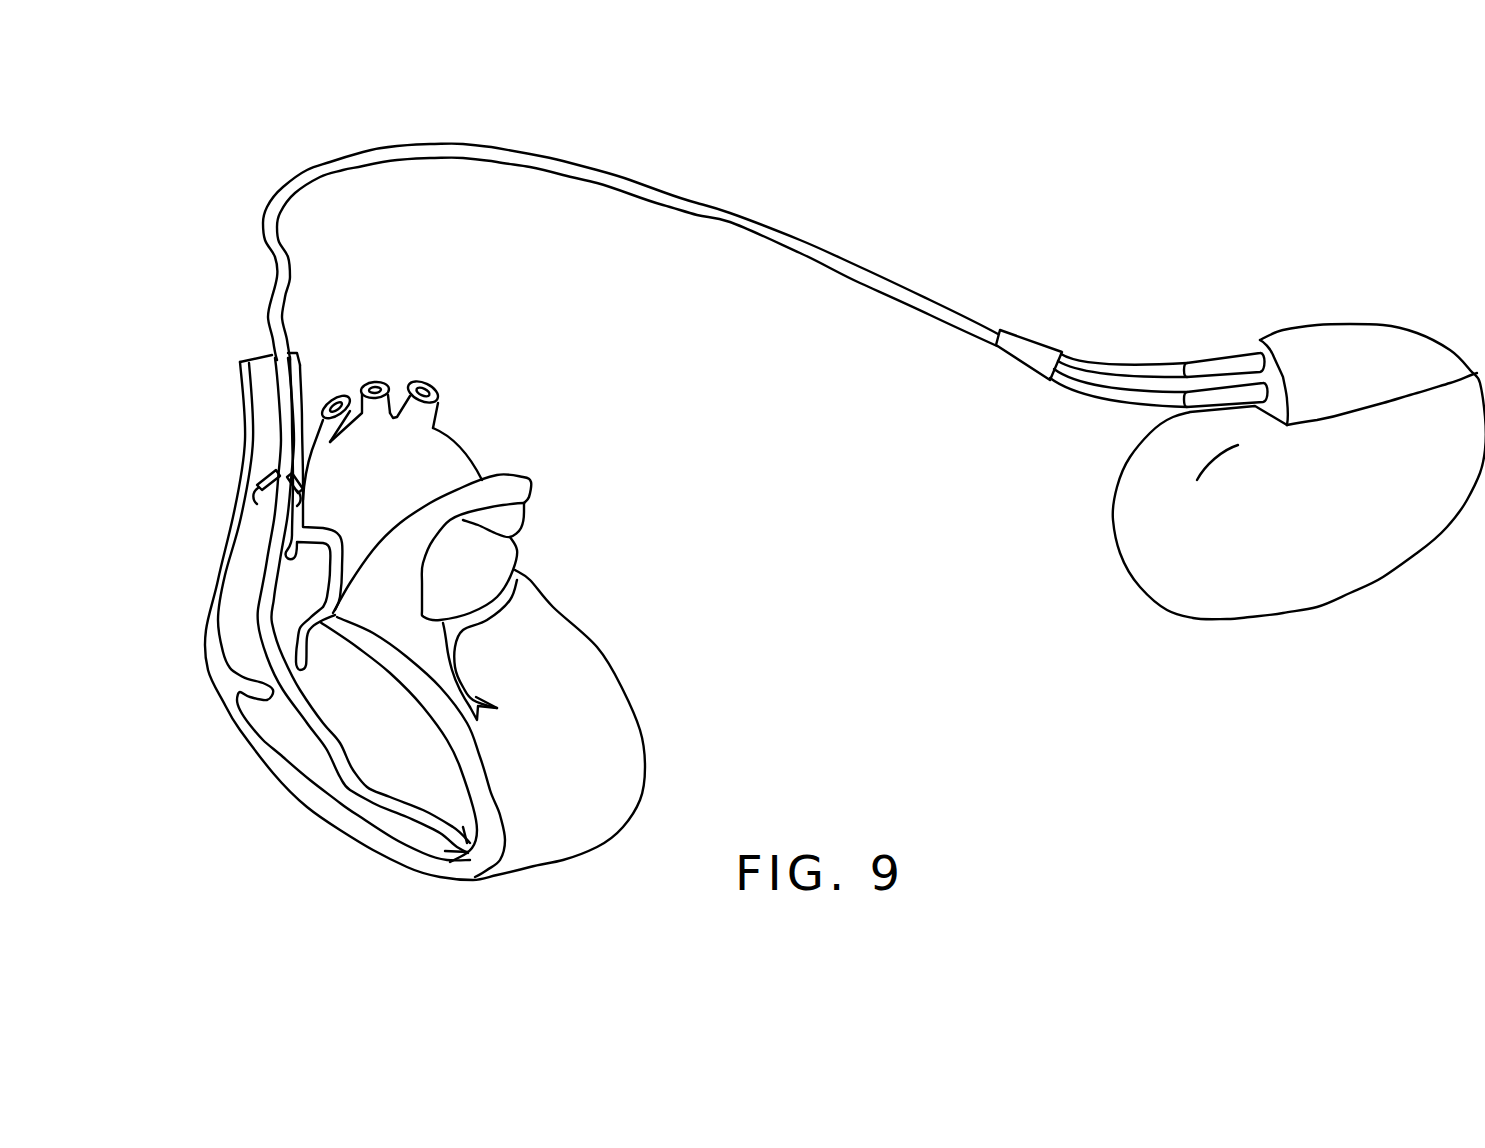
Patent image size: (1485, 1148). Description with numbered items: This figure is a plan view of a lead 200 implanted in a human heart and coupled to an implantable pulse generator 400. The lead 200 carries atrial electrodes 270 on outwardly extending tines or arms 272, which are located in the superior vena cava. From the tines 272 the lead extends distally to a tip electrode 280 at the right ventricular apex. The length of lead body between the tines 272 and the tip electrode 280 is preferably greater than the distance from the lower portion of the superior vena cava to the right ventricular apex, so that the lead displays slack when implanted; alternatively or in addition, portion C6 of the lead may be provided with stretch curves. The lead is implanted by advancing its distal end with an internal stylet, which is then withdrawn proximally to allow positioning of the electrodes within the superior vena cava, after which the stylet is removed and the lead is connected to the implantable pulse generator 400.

The lead 200 is at (800, 240).
The atrial electrodes 270 is at (263, 493).
The tines or arms 272 is at (290, 468).
The tip electrode 280 is at (475, 855).
The implantable pulse generator 400 is at (1260, 593).
The portion of the lead C6 is at (349, 795).